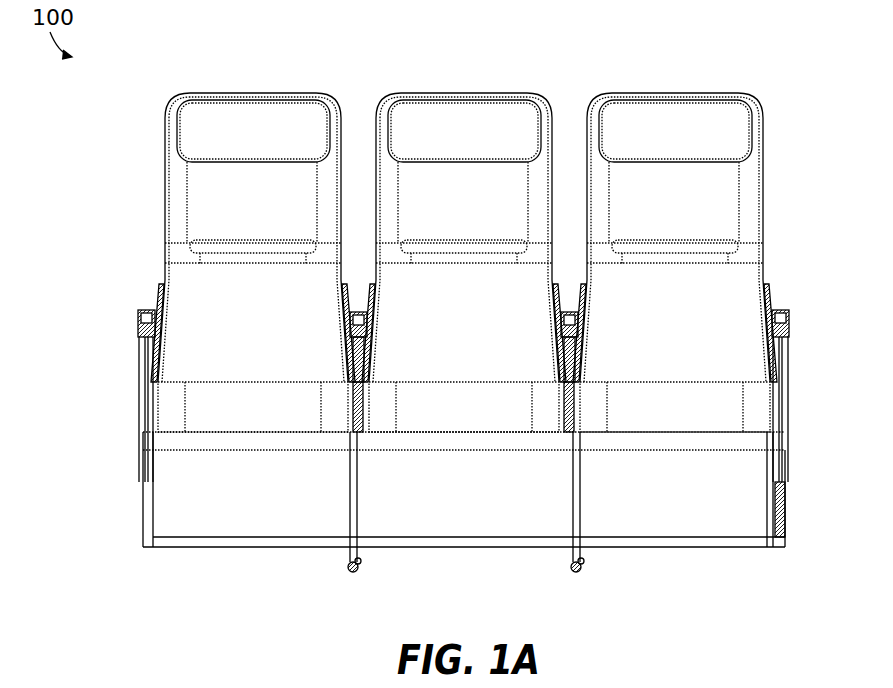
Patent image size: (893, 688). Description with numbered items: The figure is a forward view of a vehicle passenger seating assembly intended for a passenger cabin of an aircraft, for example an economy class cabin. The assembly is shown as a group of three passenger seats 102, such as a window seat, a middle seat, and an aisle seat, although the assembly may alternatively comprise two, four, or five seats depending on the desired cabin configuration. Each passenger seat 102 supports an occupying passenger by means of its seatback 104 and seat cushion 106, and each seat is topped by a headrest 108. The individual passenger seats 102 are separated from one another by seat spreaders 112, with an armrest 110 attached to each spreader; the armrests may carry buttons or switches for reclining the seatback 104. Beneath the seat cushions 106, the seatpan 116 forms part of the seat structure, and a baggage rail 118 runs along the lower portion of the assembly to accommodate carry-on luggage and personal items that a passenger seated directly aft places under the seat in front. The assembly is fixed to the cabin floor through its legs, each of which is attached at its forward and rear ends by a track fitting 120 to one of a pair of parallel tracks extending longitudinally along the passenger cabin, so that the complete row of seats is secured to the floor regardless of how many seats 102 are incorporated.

The passenger seat 102 is at (157, 85).
The seatback 104 is at (230, 207).
The seat cushion 106 is at (259, 408).
The headrest 108 is at (486, 109).
The armrest 110 is at (145, 313).
The seat spreader 112 is at (350, 488).
The seatpan 116 is at (673, 440).
The baggage rail 118 is at (777, 540).
The track fitting 120 is at (575, 565).